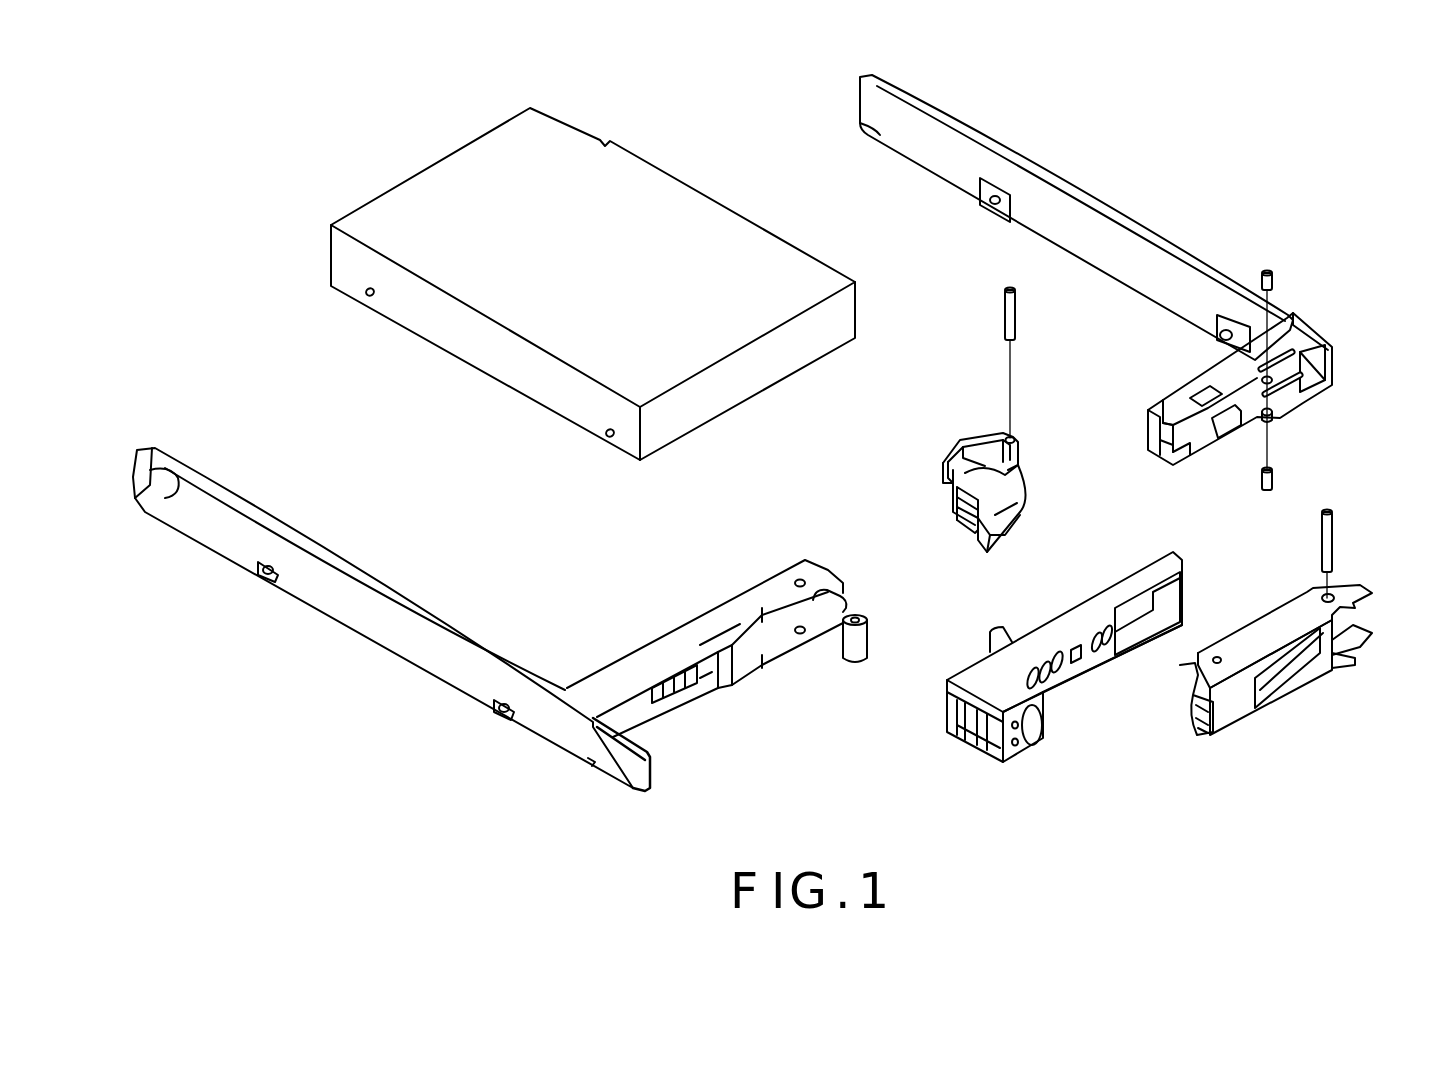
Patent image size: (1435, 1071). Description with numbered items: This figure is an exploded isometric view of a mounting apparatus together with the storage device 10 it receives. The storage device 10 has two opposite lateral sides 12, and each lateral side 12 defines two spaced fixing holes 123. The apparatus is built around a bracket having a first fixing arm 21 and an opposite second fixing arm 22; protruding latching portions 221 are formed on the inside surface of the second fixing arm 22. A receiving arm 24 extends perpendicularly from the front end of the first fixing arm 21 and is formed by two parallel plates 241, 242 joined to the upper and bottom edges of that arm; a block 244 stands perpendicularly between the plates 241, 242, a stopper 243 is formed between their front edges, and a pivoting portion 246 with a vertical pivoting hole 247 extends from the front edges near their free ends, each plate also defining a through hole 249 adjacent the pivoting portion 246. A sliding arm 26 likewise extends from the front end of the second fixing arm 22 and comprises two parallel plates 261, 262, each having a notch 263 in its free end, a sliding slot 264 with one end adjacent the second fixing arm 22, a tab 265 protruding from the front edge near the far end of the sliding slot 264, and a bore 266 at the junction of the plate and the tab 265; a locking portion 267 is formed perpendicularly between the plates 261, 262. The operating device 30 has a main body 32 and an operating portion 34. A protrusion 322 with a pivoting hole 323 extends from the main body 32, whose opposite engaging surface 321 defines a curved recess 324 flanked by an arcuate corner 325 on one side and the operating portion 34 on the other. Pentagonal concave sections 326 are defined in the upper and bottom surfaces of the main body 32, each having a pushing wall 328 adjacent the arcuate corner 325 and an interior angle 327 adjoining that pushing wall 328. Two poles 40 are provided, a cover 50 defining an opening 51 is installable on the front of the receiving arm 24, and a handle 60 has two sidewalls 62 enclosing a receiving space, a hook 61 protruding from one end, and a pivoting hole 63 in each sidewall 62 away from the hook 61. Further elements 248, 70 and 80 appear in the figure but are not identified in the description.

The storage device 10 is at (477, 198).
The lateral side 12 is at (513, 360).
The fixing hole 123 is at (365, 295).
The first fixing arm 21 is at (402, 630).
The second fixing arm 22 is at (1083, 220).
The latching portion 221 is at (995, 203).
The receiving arm 24 is at (751, 676).
The plate 241 is at (722, 620).
The plate 242 is at (732, 667).
The stopper 243 is at (708, 676).
The block 244 is at (667, 693).
The pivoting portion 246 is at (855, 645).
The pivoting hole 247 is at (860, 620).
The resilient arm 248 is at (772, 662).
The through hole 249 is at (798, 580).
The sliding arm 26 is at (1300, 340).
The plate 261 is at (1187, 403).
The plate 262 is at (1192, 457).
The notch 263 is at (1170, 420).
The sliding slot 264 is at (1317, 342).
The tab 265 is at (1310, 413).
The bore 266 is at (1297, 392).
The locking portion 267 is at (1230, 417).
The operating device 30 is at (985, 473).
The main body 32 is at (973, 473).
The engaging surface 321 is at (950, 490).
The protrusion 322 is at (1008, 460).
The pivoting hole 323 is at (1012, 440).
The curved recess 324 is at (952, 488).
The arcuate corner 325 is at (950, 473).
The pentagonal concave section 326 is at (983, 460).
The interior angle 327 is at (950, 468).
The pushing wall 328 is at (960, 453).
The operating portion 34 is at (1008, 527).
The pole 40 is at (1273, 280).
The cover 50 is at (1064, 683).
The opening 51 is at (1125, 637).
The handle 60 is at (1288, 680).
The hook 61 is at (1183, 677).
The sidewall 62 is at (1257, 640).
The pivoting hole 63 is at (1328, 598).
The pin 70 is at (1333, 537).
The pin 80 is at (1012, 318).